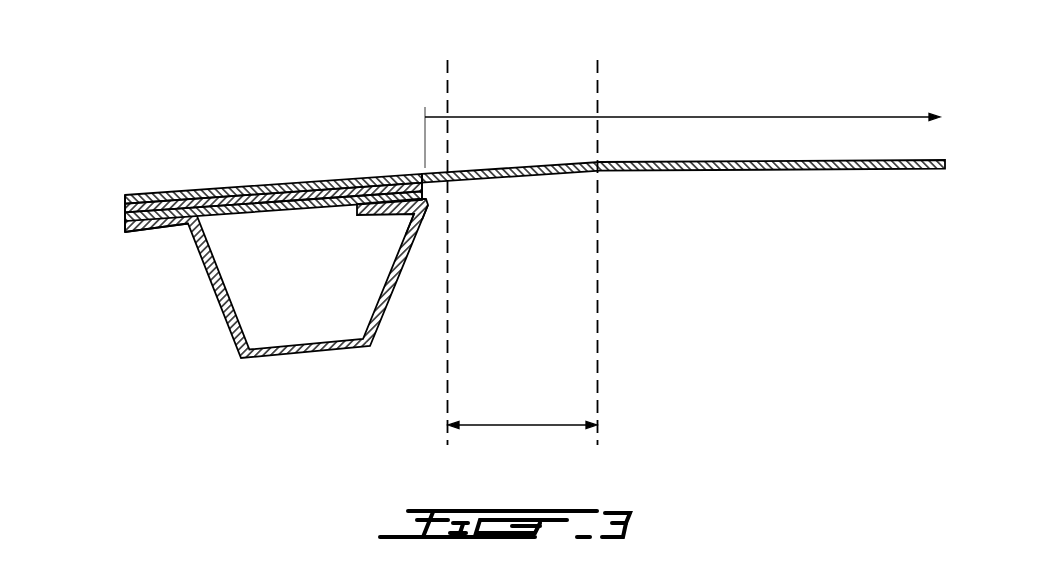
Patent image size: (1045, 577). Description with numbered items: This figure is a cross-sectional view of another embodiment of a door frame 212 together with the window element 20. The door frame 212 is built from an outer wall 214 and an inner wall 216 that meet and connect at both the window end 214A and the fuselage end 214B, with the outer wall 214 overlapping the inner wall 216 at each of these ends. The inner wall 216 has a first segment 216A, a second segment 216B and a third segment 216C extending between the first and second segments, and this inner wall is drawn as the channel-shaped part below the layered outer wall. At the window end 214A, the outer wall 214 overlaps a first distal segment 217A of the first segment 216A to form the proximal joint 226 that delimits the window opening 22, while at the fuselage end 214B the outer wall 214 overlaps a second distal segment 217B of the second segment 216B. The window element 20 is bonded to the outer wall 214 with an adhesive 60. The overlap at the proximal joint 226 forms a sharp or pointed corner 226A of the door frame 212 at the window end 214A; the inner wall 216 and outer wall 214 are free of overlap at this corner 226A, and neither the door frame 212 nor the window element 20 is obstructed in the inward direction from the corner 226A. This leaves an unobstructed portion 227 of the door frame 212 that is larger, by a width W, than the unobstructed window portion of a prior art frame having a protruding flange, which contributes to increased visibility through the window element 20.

The window element 20 is at (843, 149).
The window opening 22 is at (758, 265).
The adhesive 60 is at (163, 207).
The door frame 212 is at (311, 327).
The outer wall 214 is at (301, 179).
The window end 214A is at (382, 183).
The fuselage end 214B is at (143, 244).
The inner wall 216 is at (332, 327).
The first segment 216A is at (397, 288).
The second segment 216B is at (225, 328).
The third segment 216C is at (310, 360).
The first distal segment 217A is at (390, 234).
The second distal segment 217B is at (172, 237).
The proximal joint 226 is at (443, 211).
The corner 226A is at (426, 197).
The unobstructed portion 227 is at (682, 126).
The width W is at (522, 411).